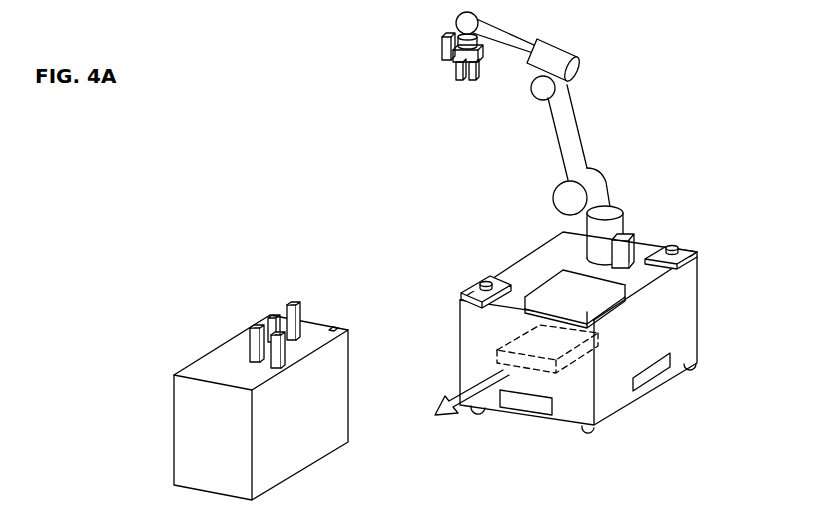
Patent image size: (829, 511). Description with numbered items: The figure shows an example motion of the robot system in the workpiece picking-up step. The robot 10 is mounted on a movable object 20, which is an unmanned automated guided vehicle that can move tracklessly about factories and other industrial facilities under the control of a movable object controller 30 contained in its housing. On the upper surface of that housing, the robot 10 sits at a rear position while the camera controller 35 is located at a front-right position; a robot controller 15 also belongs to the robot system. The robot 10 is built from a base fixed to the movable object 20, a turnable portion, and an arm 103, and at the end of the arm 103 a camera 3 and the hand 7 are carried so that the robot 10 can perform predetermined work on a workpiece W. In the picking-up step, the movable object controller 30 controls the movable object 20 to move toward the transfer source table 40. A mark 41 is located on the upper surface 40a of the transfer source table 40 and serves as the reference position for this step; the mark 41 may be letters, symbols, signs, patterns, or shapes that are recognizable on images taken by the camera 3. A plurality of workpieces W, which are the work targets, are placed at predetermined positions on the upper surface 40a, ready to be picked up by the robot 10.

The camera 3 is at (442, 37).
The robot hand 7 is at (450, 68).
The robot 10 is at (536, 140).
The arm 103 is at (553, 128).
The robot controller 15 is at (638, 239).
The movable object 20 is at (601, 332).
The movable object controller 30 is at (592, 368).
The camera controller 35 is at (600, 306).
The transfer source table 40 is at (229, 367).
The upper surface 40a is at (213, 368).
The mark 41 is at (333, 327).
The workpiece W is at (253, 327).